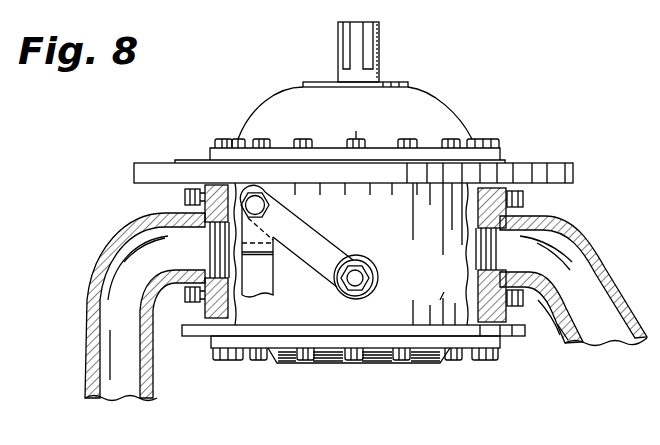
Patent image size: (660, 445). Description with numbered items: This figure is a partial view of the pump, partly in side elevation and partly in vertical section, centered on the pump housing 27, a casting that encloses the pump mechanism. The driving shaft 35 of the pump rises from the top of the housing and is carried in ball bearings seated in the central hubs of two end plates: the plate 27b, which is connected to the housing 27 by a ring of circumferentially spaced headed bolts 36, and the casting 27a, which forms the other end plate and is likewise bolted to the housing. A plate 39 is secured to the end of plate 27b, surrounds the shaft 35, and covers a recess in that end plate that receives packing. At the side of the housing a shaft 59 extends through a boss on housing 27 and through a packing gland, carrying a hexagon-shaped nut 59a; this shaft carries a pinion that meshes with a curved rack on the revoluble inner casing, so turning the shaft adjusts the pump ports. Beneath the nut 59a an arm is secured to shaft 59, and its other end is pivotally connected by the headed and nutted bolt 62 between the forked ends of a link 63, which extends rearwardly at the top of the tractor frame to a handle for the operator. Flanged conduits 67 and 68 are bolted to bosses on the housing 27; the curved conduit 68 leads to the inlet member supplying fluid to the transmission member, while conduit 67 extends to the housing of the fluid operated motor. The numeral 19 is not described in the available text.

The shaft 35 is at (340, 56).
The plate 39 is at (400, 85).
The plate 27b is at (434, 97).
The headed bolts 36 is at (481, 138).
The pump housing 27 is at (568, 162).
The casting 27a is at (388, 350).
The headed and nutted bolt 62 is at (253, 194).
The link 63 is at (256, 297).
The lever arm 19 is at (305, 248).
The shaft 59 is at (357, 283).
The nut 59a is at (350, 287).
The flanged conduit 68 is at (86, 360).
The flanged conduit 67 is at (570, 325).